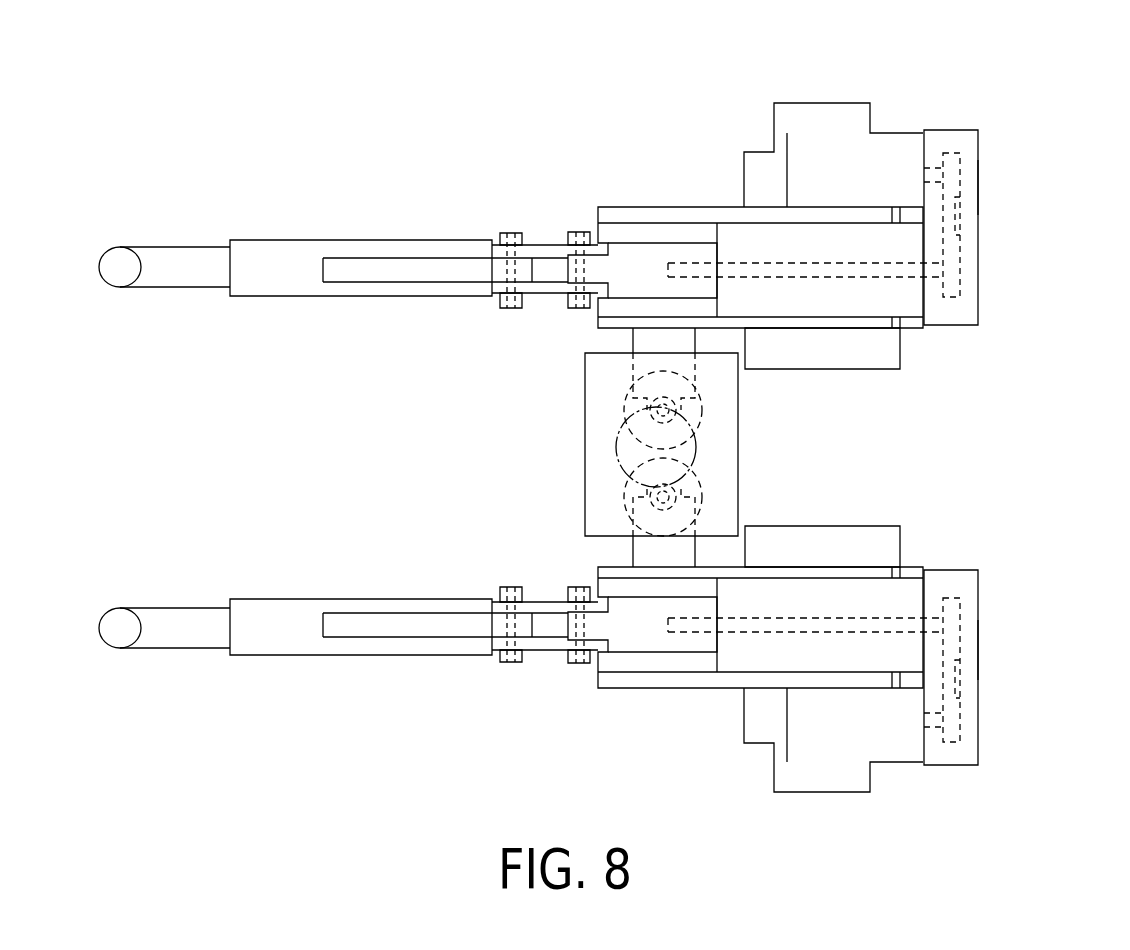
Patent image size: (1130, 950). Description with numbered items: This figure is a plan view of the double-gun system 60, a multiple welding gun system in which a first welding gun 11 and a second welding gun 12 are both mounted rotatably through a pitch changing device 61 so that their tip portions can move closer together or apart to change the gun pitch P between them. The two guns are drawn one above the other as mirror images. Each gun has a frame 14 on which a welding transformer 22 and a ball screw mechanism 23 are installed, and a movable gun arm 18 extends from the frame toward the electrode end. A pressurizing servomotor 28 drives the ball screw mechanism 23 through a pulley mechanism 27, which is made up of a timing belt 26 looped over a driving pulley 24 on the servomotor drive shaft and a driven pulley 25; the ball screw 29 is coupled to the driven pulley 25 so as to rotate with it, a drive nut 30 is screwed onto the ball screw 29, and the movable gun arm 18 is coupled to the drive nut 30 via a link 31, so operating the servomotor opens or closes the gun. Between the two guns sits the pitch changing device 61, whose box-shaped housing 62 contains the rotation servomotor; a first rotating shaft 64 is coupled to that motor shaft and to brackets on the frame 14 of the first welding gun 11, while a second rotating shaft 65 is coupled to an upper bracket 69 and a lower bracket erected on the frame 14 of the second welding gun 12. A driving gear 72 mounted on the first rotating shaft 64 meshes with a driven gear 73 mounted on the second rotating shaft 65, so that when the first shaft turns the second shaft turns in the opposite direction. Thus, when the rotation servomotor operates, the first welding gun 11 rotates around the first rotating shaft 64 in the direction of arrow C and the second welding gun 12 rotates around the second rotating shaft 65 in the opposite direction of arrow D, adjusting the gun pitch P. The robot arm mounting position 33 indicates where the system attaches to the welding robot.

The double-gun system 60 is at (768, 35).
The second welding gun 12 is at (924, 100).
The first welding gun 11 is at (891, 503).
The frame 14 is at (708, 688).
The movable gun arm 18 is at (270, 656).
The welding transformer 22 is at (900, 545).
The ball screw mechanism 23 is at (1010, 578).
The driving pulley 24 is at (1008, 705).
The driven pulley 25 is at (1008, 607).
The timing belt 26 is at (1008, 668).
The pulley mechanism 27 is at (1008, 635).
The pressurizing servomotor 28 is at (823, 730).
The ball screw 29 is at (855, 615).
The drive nut 30 is at (686, 652).
The link 31 is at (537, 660).
The robot arm mounting position 33 is at (614, 453).
The pitch changing device 61 is at (782, 452).
The housing 62 is at (738, 385).
The first rotating shaft 64 is at (682, 493).
The second rotating shaft 65 is at (672, 410).
The upper bracket 69 is at (632, 338).
The driving gear 72 is at (632, 503).
The driven gear 73 is at (632, 400).
The gun pitch P is at (75, 267).
The rotation direction of second welding gun D is at (420, 323).
The rotation direction of first welding gun C is at (420, 485).